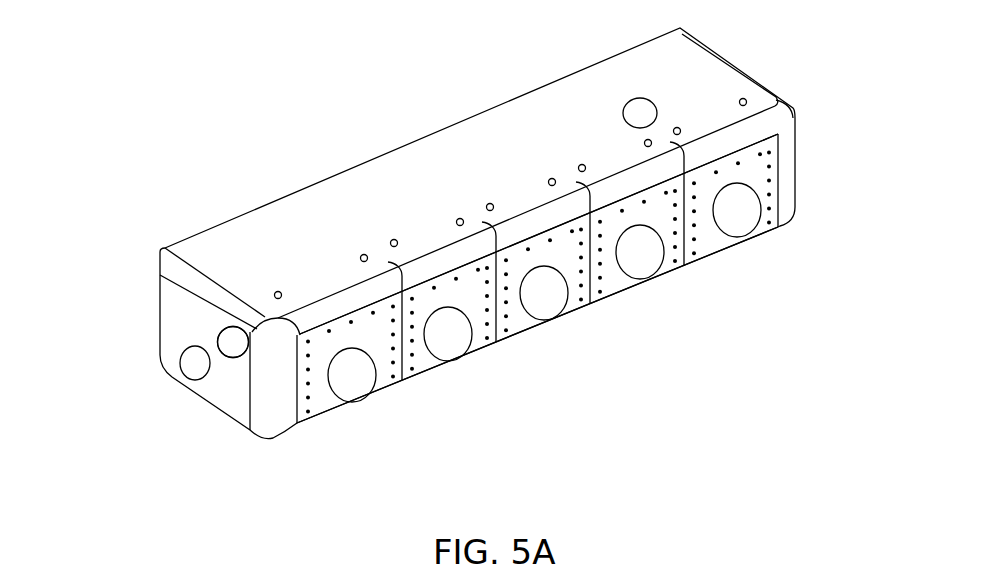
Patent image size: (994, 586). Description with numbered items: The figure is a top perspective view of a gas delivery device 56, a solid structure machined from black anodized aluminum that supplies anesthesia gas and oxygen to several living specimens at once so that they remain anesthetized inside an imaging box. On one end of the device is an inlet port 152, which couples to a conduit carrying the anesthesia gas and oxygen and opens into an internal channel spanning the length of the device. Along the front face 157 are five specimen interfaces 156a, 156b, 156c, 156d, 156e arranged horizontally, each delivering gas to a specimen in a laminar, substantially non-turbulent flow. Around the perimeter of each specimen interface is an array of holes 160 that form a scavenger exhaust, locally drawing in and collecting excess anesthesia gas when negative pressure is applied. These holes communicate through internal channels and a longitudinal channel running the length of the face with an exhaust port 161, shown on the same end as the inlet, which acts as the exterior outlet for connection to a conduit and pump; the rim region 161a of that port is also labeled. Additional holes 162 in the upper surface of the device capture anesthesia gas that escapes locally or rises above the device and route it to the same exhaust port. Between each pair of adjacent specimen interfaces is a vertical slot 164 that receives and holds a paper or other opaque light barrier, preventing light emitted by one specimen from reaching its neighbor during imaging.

The gas delivery device 56 is at (268, 77).
The inlet port 152 is at (193, 363).
The specimen interface 156a is at (348, 383).
The specimen interface 156b is at (457, 337).
The specimen interface 156c is at (547, 303).
The specimen interface 156d is at (640, 262).
The specimen interface 156e is at (737, 223).
The front face 157 is at (762, 175).
The holes 160 is at (490, 338).
The exhaust port 161 is at (232, 343).
The rim of end face opening 161a is at (220, 337).
The holes 162 is at (552, 182).
The vertical slot 164 is at (413, 367).